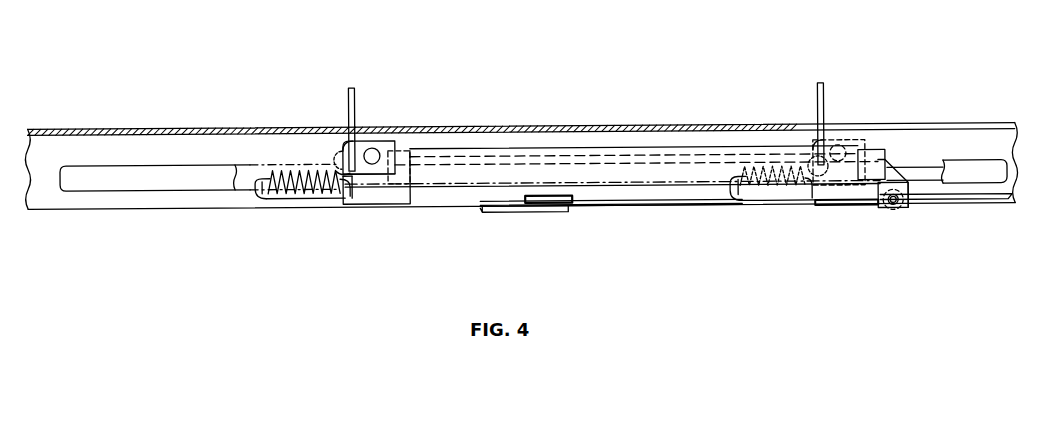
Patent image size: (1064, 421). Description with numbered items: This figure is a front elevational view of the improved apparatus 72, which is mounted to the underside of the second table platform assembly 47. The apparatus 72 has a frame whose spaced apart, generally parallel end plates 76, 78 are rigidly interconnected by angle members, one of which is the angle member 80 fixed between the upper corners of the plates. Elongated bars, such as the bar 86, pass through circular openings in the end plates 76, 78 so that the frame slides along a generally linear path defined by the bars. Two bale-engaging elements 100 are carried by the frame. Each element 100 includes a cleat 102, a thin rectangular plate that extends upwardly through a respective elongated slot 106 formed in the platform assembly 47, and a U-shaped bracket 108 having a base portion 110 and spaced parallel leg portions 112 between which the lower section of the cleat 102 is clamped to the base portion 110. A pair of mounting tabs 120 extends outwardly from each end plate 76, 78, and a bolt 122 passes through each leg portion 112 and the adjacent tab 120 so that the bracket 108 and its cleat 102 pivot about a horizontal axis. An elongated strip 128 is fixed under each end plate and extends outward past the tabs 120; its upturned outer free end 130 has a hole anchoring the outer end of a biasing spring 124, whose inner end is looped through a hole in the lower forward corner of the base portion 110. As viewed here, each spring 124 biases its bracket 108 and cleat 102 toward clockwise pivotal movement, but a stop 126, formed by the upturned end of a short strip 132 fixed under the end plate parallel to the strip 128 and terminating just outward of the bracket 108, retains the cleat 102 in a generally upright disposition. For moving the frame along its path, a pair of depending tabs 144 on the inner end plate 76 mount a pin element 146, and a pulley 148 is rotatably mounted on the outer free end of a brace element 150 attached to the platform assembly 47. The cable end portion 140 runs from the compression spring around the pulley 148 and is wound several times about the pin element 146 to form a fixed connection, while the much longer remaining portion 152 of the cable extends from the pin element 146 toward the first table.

The second table platform assembly 47 is at (497, 126).
The improved apparatus 72 is at (733, 246).
The end plate 76 is at (888, 162).
The end plate 78 is at (412, 168).
The angle member 80 is at (632, 187).
The elongated bar 86 is at (955, 185).
The bale-engaging element 100 is at (363, 110).
The cleat 102 is at (350, 87).
The slot 106 is at (430, 127).
The U-shaped bracket 108 is at (345, 140).
The base portion 110 is at (340, 158).
The leg portion 112 is at (404, 147).
The mounting tab 120 is at (357, 165).
The bolt 122 is at (376, 147).
The biasing spring 124 is at (290, 178).
The stop 126 is at (340, 196).
The elongated strip 128 is at (300, 199).
The upturned outer free end 130 is at (258, 200).
The short strip 132 is at (368, 205).
The end portion of cable 140 is at (690, 206).
The tab 144 is at (898, 206).
The pin element 146 is at (895, 206).
The pulley 148 is at (566, 204).
The brace element 150 is at (515, 213).
The remaining portion of cable 152 is at (1000, 204).